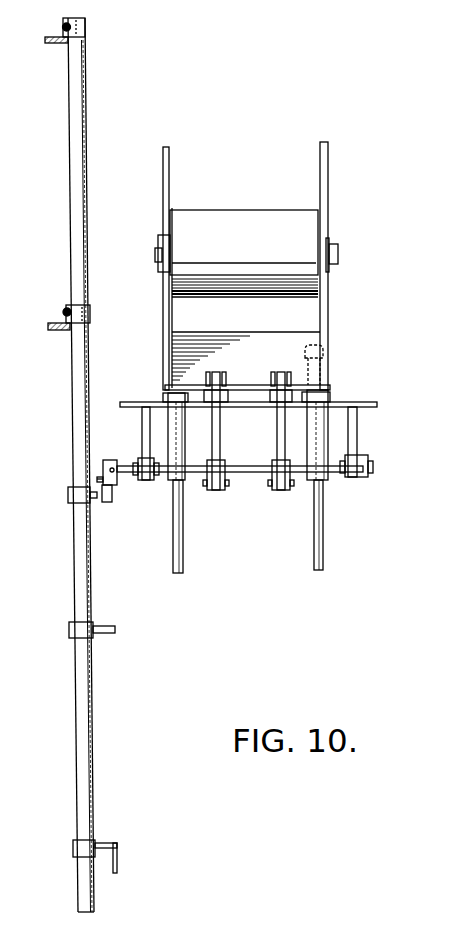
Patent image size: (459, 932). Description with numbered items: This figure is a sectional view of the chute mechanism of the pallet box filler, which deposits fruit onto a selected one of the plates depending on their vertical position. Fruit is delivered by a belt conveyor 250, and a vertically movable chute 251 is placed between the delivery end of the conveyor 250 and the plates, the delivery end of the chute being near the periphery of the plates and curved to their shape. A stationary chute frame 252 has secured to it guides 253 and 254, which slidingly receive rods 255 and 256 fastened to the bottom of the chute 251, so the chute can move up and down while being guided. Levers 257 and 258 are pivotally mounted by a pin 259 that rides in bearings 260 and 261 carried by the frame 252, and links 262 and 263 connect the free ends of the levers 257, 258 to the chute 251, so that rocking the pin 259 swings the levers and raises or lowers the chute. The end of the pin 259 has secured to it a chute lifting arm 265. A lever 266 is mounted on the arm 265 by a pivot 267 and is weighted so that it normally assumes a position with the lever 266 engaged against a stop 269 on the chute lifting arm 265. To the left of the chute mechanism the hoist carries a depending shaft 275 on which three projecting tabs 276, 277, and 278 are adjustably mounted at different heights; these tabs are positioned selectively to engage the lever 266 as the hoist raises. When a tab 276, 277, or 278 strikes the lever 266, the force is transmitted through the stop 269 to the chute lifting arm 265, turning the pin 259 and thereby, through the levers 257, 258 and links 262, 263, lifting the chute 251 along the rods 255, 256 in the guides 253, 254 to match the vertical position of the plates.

The belt conveyor 250 is at (222, 212).
The vertically movable chute 251 is at (326, 247).
The stationary chute frame 252 is at (135, 395).
The guide 253 is at (170, 481).
The guide 254 is at (326, 481).
The rod 255 is at (173, 562).
The rod 256 is at (323, 565).
The lever 257 is at (213, 491).
The lever 258 is at (279, 491).
The pin 259 is at (248, 456).
The bearing 260 is at (140, 460).
The bearing 261 is at (358, 457).
The link 262 is at (219, 436).
The link 263 is at (279, 432).
The chute lifting arm 265 is at (112, 461).
The lever 266 is at (107, 503).
The pivot 267 is at (97, 480).
The stop 269 is at (103, 476).
The depending shaft 275 is at (70, 128).
The projecting tab 276 is at (90, 500).
The projecting tab 277 is at (115, 629).
The projecting tab 278 is at (112, 845).